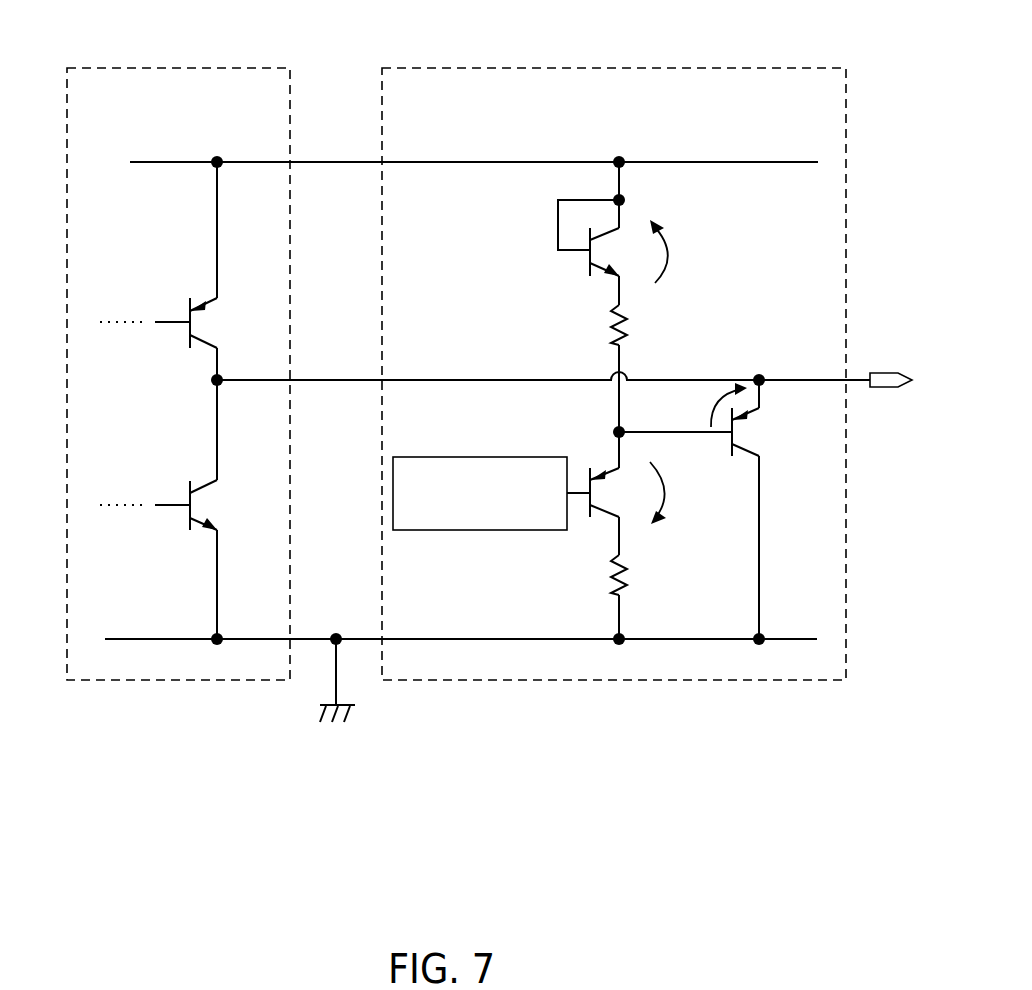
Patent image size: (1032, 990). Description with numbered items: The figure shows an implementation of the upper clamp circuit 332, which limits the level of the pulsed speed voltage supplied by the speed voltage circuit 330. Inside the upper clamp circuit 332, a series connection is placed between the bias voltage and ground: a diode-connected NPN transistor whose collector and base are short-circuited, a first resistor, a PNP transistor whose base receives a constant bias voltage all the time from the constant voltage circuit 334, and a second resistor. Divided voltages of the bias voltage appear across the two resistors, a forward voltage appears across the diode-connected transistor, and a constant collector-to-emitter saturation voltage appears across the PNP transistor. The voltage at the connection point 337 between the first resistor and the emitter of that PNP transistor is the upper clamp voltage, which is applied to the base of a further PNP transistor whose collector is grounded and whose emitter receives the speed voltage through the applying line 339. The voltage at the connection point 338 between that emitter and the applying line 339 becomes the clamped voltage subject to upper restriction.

The speed voltage circuit 330 is at (218, 67).
The upper clamp circuit 332 is at (657, 67).
The constant voltage circuit 334 is at (502, 530).
The connection point 337 is at (615, 431).
The connection point 338 is at (759, 378).
The applying line 339 is at (333, 382).